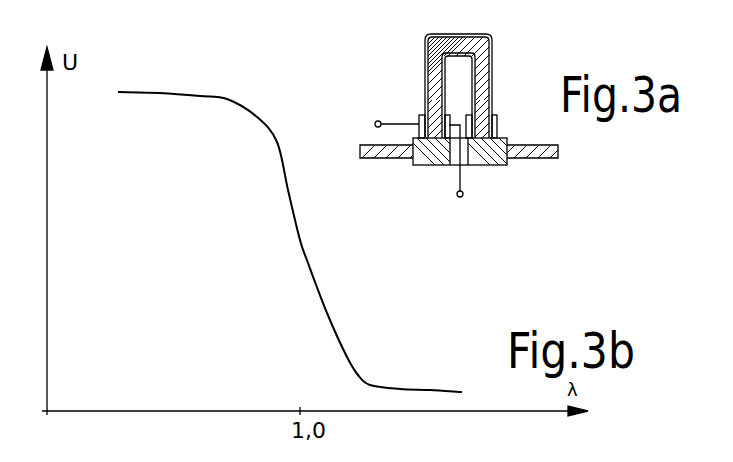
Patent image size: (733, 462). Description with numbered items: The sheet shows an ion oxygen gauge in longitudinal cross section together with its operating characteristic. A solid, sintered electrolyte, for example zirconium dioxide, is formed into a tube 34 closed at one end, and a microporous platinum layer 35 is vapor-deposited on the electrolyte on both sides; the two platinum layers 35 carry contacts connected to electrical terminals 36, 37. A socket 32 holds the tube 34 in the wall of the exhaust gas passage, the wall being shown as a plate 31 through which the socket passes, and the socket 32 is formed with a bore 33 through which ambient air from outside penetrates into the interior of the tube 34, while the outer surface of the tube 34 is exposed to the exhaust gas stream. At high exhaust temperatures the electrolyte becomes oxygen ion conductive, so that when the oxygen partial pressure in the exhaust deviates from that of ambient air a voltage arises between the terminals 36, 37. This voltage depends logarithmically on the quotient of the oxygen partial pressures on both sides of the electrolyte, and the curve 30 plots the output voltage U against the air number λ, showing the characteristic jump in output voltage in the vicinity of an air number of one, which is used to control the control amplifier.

In FIG. 3b, the curve 30 is at (307, 266).
In FIG. 3a, the carrier plate 31 is at (537, 158).
In FIG. 3a, the socket 32 is at (487, 166).
In FIG. 3a, the bore 33 is at (464, 166).
In FIG. 3a, the tube 34 is at (483, 45).
In FIG. 3a, the platinum layer 35 is at (466, 99).
In FIG. 3a, the electrical terminal 36 is at (378, 121).
In FIG. 3a, the electrical terminal 37 is at (457, 196).